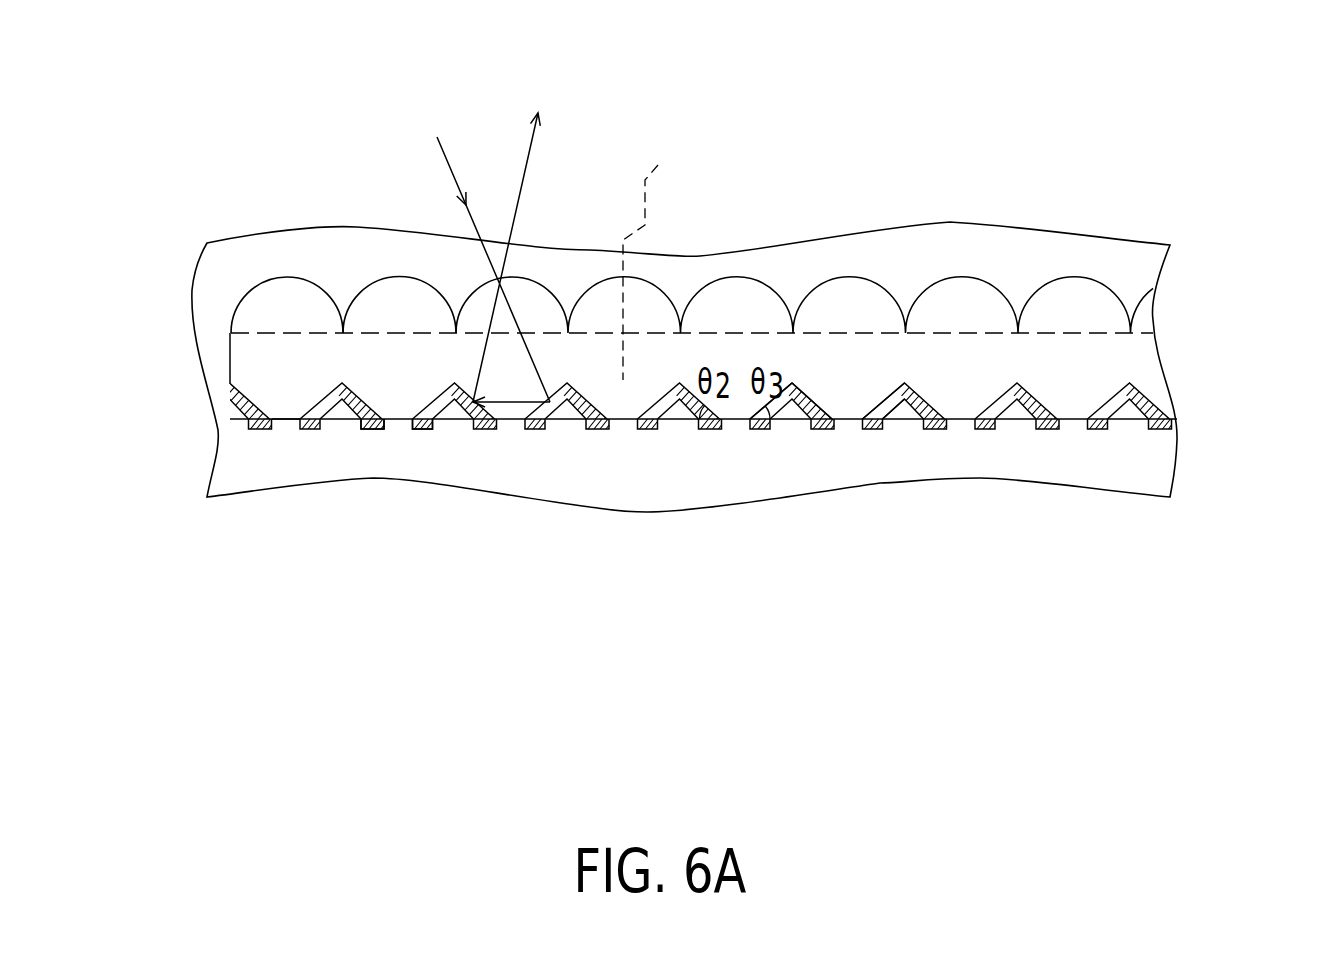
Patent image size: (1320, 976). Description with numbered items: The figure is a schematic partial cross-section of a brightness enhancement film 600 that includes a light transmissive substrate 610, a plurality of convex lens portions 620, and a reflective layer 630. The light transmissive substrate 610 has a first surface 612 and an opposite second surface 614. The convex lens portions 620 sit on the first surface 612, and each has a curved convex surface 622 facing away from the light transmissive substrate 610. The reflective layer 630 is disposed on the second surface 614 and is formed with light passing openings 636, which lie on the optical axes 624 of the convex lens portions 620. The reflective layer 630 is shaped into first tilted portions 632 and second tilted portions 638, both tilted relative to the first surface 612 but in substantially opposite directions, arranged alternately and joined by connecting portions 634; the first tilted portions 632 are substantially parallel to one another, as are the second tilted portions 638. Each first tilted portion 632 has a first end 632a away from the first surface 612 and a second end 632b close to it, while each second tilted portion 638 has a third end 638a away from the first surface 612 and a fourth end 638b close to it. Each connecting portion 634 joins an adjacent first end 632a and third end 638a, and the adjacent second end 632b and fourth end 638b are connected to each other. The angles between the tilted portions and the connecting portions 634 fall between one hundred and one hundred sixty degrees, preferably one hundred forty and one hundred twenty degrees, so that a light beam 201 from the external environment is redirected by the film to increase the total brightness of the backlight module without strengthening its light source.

The light beam 201 is at (528, 163).
The brightness enhancement film 600 is at (1292, 661).
The light transmissive substrate 610 is at (245, 353).
The first surface 612 is at (276, 322).
The second surface 614 is at (315, 405).
The convex lens portions 620 is at (287, 330).
The curved convex surface 622 is at (328, 279).
The optical axes 624 is at (666, 258).
The reflective layer 630 is at (247, 417).
The first tilted portions 632 is at (345, 420).
The first end 632a is at (827, 430).
The second end 632b is at (793, 383).
The connecting portions 634 is at (435, 442).
The light passing openings 636 is at (293, 443).
The second tilted portions 638 is at (436, 419).
The third end 638a is at (899, 410).
The fourth end 638b is at (905, 383).